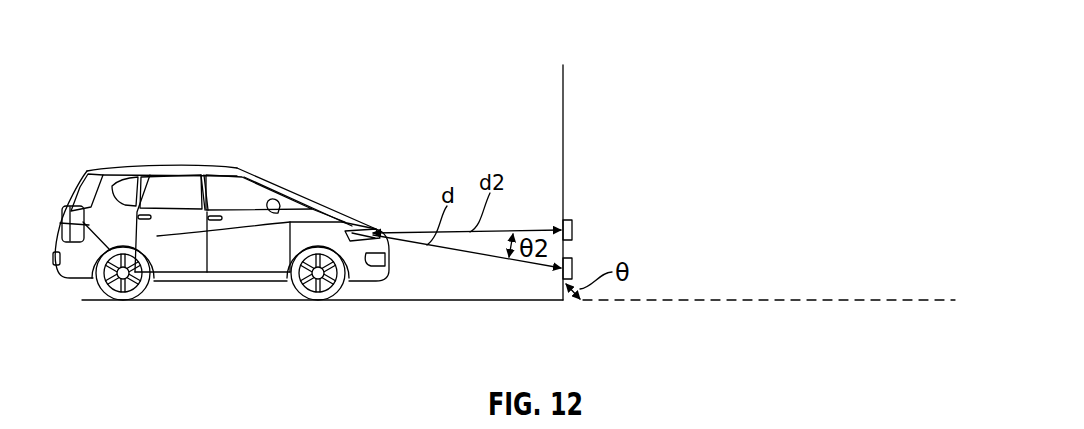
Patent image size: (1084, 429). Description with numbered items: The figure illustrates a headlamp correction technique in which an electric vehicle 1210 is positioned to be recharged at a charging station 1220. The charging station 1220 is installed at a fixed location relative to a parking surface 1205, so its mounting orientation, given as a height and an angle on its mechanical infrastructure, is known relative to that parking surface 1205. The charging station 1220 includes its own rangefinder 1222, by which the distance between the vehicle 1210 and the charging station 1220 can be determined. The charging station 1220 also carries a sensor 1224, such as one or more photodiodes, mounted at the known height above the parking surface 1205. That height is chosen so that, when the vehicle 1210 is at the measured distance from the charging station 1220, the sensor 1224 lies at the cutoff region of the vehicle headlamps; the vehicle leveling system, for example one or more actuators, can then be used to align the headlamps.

The vehicle 1210 is at (233, 167).
The parking surface 1205 is at (425, 302).
The charging station 1220 is at (563, 76).
The rangefinder 1222 is at (573, 230).
The sensor 1224 is at (573, 268).